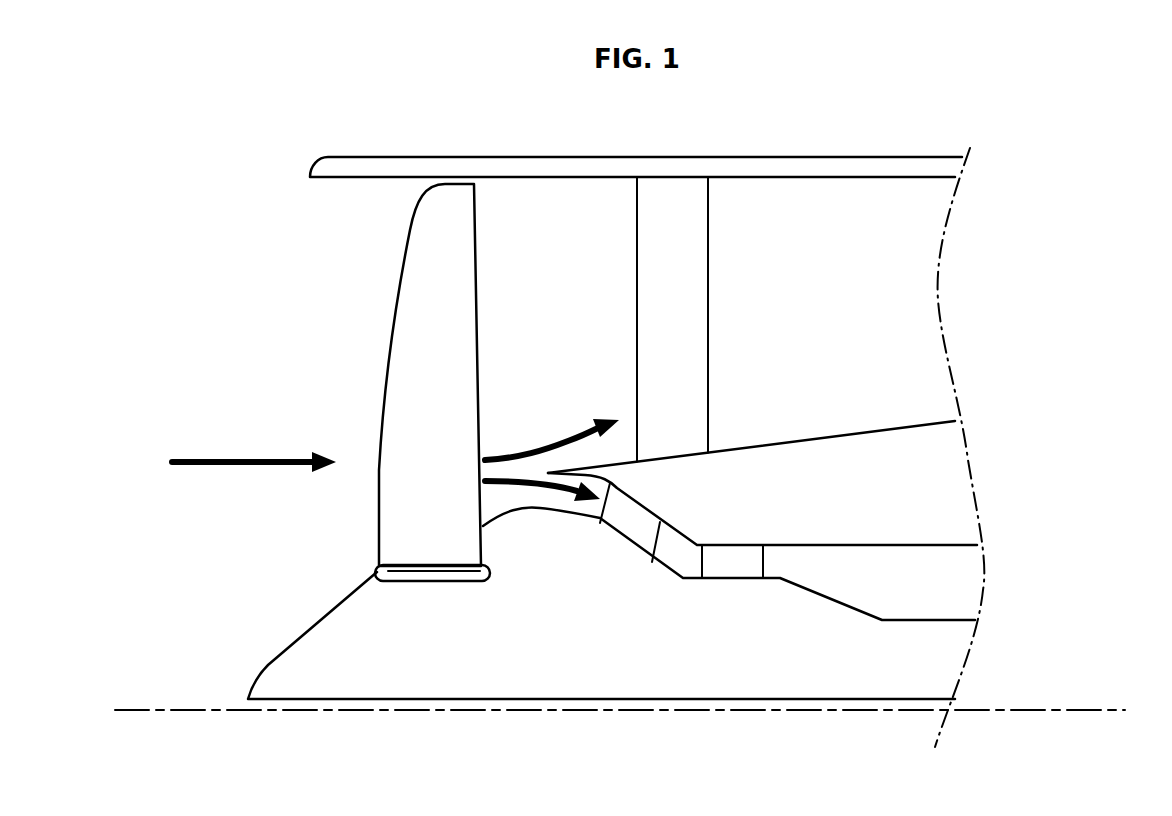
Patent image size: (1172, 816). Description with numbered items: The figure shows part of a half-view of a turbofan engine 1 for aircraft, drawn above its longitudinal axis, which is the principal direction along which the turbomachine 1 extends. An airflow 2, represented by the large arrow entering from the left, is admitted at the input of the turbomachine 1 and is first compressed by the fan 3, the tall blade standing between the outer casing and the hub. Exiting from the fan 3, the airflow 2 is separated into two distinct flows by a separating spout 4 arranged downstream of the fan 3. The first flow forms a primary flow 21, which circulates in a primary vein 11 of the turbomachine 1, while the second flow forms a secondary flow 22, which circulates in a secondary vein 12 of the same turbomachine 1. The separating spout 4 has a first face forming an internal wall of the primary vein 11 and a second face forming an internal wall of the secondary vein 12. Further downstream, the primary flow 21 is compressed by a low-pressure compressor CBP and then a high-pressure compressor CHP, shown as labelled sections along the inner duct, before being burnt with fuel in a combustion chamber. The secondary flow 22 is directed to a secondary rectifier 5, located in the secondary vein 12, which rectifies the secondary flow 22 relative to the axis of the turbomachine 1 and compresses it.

The turbofan engine 1 is at (620, 447).
The airflow 2 is at (245, 459).
The fan 3 is at (455, 342).
The separating spout 4 is at (573, 468).
The secondary rectifier 5 is at (683, 313).
The primary vein 11 is at (850, 584).
The secondary vein 12 is at (853, 314).
The primary flow 21 is at (528, 478).
The secondary flow 22 is at (557, 431).
The low-pressure compressor CBP is at (651, 536).
The high-pressure compressor CHP is at (753, 572).